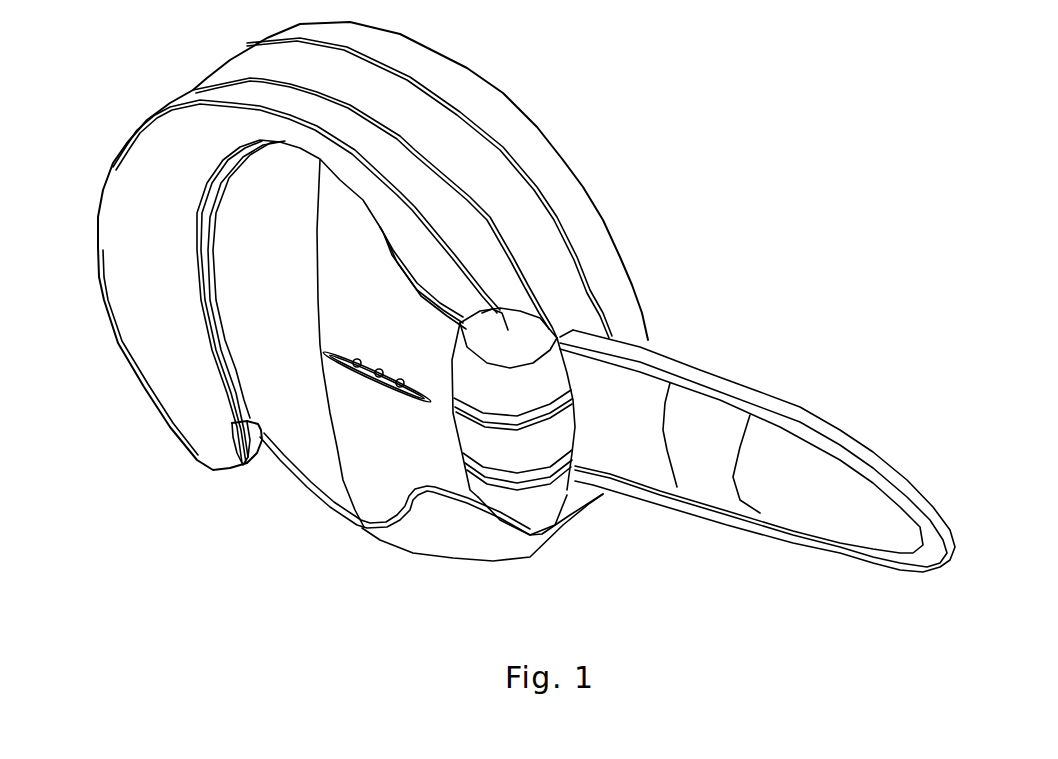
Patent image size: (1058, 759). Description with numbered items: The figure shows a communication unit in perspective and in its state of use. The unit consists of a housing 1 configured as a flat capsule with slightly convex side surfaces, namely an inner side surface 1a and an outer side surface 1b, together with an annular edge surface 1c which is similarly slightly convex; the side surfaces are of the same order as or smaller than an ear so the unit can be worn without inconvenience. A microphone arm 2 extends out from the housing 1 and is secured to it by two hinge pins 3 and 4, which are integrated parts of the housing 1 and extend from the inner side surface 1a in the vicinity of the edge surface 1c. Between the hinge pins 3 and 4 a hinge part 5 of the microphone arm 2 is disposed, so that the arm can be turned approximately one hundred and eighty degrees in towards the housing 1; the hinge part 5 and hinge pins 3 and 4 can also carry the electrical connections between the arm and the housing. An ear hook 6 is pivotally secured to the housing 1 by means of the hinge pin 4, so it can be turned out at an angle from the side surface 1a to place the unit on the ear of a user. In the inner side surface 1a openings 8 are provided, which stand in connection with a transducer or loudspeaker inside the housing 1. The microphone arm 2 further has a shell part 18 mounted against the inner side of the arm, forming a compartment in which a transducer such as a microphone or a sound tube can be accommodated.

The housing 1 is at (504, 322).
The inner side surface 1a is at (431, 386).
The outer side surface 1b is at (377, 181).
The annular edge surface 1c is at (362, 180).
The microphone arm 2 is at (757, 444).
The hinge pin 3 is at (525, 442).
The hinge pin 4 is at (500, 505).
The hinge part 5 is at (517, 536).
The ear hook 6 is at (259, 305).
The openings 8 is at (340, 441).
The shell part 18 is at (725, 486).